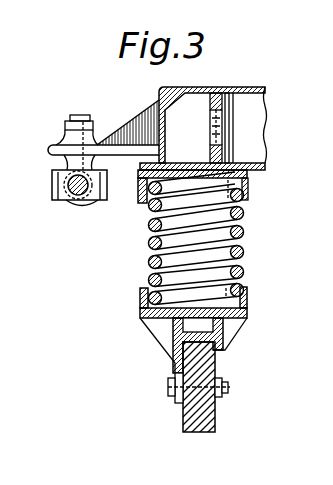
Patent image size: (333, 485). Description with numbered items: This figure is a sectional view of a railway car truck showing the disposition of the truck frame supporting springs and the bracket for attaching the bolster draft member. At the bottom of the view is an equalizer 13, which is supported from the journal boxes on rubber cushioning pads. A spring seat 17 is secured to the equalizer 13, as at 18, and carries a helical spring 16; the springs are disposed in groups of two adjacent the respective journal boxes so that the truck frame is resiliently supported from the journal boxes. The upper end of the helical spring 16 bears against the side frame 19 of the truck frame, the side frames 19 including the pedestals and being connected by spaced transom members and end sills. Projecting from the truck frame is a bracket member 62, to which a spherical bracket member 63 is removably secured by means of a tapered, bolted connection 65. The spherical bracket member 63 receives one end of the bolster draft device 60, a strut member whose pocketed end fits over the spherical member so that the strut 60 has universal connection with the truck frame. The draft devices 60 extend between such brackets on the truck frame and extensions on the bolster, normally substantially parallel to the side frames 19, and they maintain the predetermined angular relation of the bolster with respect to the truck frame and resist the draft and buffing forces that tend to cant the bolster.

The equalizer 13 is at (185, 425).
The helical spring 16 is at (246, 238).
The spring seat 17 is at (140, 311).
The spring seat securement 18 is at (168, 387).
The side frame 19 is at (200, 88).
The bolster draft device 60 is at (72, 204).
The bracket member 62 is at (123, 136).
The spherical bracket member 63 is at (62, 185).
The tapered bolted connection 65 is at (62, 163).